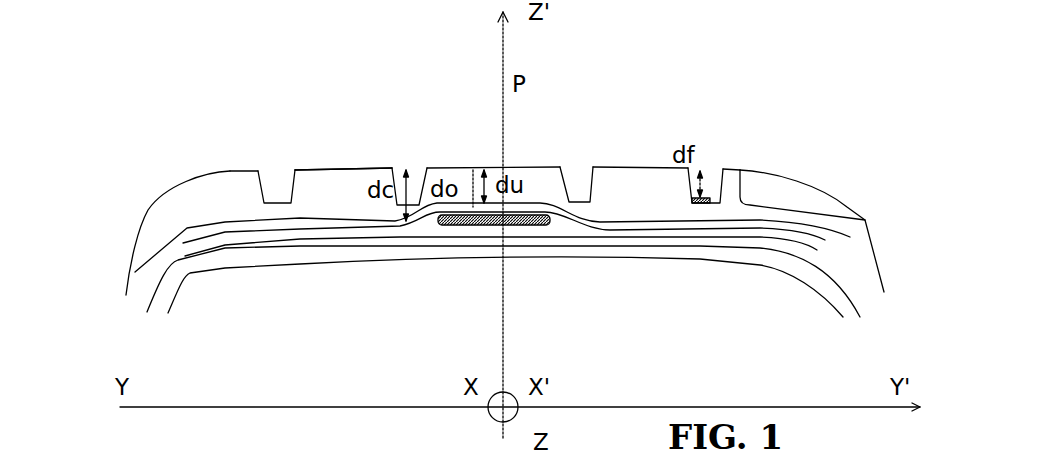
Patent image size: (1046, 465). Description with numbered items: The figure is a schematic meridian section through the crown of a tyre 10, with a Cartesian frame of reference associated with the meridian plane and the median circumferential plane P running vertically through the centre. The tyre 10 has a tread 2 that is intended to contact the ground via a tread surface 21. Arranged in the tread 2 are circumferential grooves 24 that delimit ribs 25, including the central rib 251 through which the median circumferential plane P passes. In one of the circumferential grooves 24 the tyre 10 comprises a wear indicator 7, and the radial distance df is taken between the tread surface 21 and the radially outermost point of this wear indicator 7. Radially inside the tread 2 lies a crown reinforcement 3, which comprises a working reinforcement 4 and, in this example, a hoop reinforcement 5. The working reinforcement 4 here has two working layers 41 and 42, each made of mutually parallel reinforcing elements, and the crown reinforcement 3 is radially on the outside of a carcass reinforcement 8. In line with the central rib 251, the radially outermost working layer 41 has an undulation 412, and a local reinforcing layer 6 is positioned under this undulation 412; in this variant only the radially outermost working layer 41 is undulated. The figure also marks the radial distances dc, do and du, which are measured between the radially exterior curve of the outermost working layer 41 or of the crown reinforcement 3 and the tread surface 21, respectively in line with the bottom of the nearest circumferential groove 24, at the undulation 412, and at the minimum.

The tyre 10 is at (702, 90).
The tread 2 is at (494, 138).
The tread surface 21 is at (357, 166).
The circumferential grooves 24 is at (275, 182).
The ribs 25 is at (357, 188).
The central rib 251 is at (533, 180).
The wear indicator 7 is at (712, 185).
The crown reinforcement 3 is at (433, 261).
The hoop reinforcement 5 is at (444, 263).
The working reinforcement 4 is at (449, 277).
The radially outermost working layer 41 is at (183, 243).
The working layer 42 is at (185, 256).
The undulation 412 is at (542, 212).
The local reinforcing layer 6 is at (466, 223).
The carcass reinforcement 8 is at (687, 248).